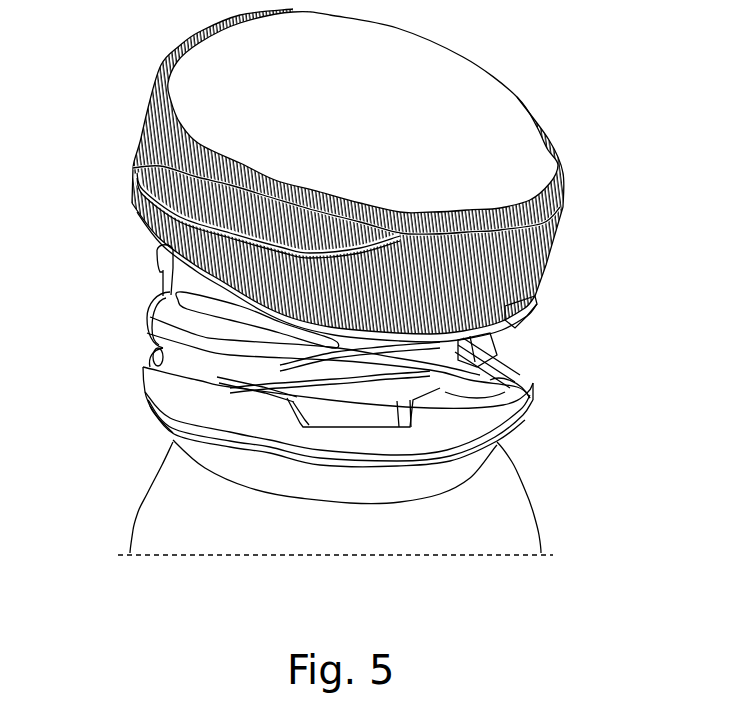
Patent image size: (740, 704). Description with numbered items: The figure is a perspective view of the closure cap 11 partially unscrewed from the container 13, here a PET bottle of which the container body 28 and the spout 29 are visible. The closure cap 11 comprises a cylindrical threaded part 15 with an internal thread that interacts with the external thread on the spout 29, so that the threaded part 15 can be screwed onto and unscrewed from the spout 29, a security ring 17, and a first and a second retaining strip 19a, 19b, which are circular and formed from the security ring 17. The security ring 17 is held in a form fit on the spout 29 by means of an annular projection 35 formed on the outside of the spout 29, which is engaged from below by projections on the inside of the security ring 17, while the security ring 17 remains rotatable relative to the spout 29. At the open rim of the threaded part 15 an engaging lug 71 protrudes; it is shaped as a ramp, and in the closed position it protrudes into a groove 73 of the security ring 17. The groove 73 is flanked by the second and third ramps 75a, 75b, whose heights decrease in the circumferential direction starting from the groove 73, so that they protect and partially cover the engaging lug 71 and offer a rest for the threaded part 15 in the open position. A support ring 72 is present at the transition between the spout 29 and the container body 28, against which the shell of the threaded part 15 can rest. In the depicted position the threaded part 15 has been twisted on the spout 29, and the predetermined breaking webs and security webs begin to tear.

The closure cap 11 is at (546, 101).
The container 13 is at (508, 513).
The threaded part 15 is at (550, 220).
The security ring 17 is at (268, 420).
The first retaining strip 19a is at (167, 307).
The second retaining strip 19b is at (530, 307).
The container body 28 is at (452, 515).
The spout 29 is at (177, 333).
The annular projection 35 is at (372, 383).
The engaging lug 71 is at (513, 323).
The support ring 72 is at (158, 410).
The groove 73 is at (485, 398).
The second ramp 75a is at (430, 412).
The third ramp 75b is at (517, 363).